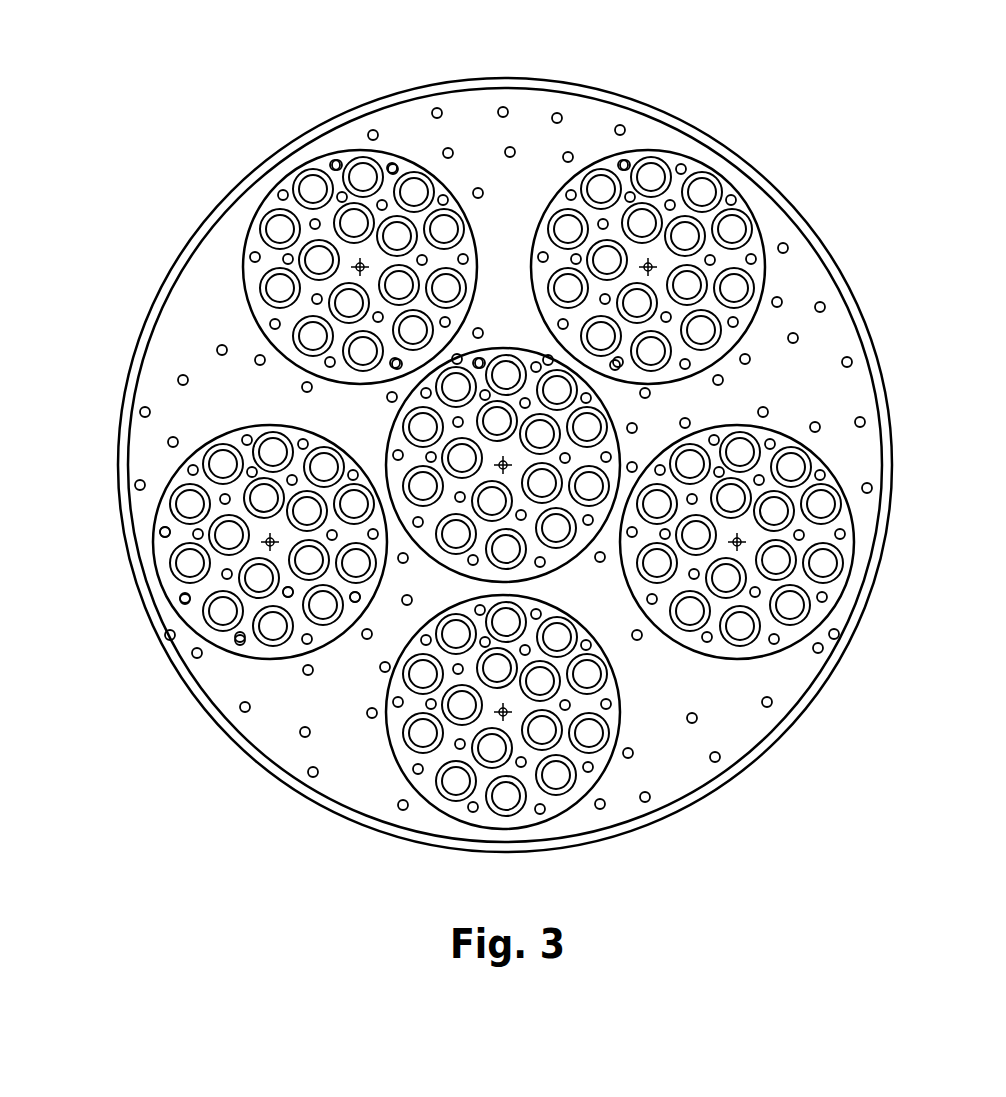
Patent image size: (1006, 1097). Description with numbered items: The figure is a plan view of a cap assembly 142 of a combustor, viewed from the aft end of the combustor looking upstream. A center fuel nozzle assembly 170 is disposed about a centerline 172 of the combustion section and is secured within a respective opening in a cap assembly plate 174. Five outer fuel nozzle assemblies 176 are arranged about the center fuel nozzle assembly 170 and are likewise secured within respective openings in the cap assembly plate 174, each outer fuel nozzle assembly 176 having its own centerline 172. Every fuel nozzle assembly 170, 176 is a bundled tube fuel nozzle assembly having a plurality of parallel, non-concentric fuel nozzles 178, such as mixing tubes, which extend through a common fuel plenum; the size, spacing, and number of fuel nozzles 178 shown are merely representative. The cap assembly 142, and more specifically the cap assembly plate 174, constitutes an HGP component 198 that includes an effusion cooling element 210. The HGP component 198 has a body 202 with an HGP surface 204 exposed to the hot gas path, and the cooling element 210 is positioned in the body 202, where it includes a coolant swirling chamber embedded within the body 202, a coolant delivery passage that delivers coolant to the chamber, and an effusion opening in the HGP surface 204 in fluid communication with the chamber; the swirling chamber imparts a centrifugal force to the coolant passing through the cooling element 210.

The cap assembly 142 is at (128, 172).
The center fuel nozzle assembly 170 is at (620, 418).
The centerline 172 is at (503, 462).
The cap assembly plate 174 is at (153, 397).
The outer fuel nozzle assembly 176 is at (280, 178).
The fuel nozzle 178 is at (453, 557).
The HGP component 198 is at (810, 288).
The body 202 is at (545, 108).
The HGP surface 204 is at (523, 112).
The effusion cooling element 210 is at (441, 198).